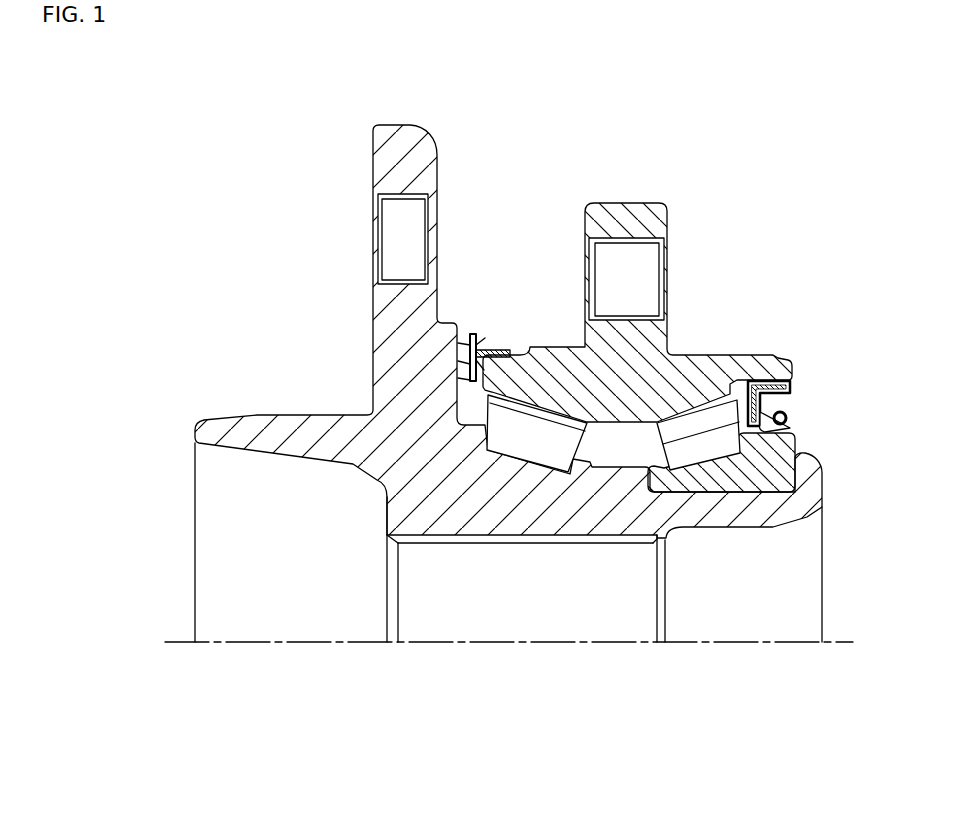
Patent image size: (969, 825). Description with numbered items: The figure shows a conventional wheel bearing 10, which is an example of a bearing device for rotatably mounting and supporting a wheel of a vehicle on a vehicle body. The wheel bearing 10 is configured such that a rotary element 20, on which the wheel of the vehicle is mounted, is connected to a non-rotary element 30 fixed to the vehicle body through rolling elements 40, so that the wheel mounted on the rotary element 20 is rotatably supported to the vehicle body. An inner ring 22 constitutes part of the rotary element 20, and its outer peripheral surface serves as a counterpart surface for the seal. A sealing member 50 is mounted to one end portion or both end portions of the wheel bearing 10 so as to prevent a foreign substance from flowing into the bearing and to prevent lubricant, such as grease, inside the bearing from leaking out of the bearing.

The wheel bearing 10 is at (237, 86).
The rotary element 20 is at (387, 342).
The inner ring 22 is at (773, 475).
The non-rotary element 30 is at (707, 370).
The rolling elements 40 is at (703, 457).
The sealing member 50 is at (802, 403).